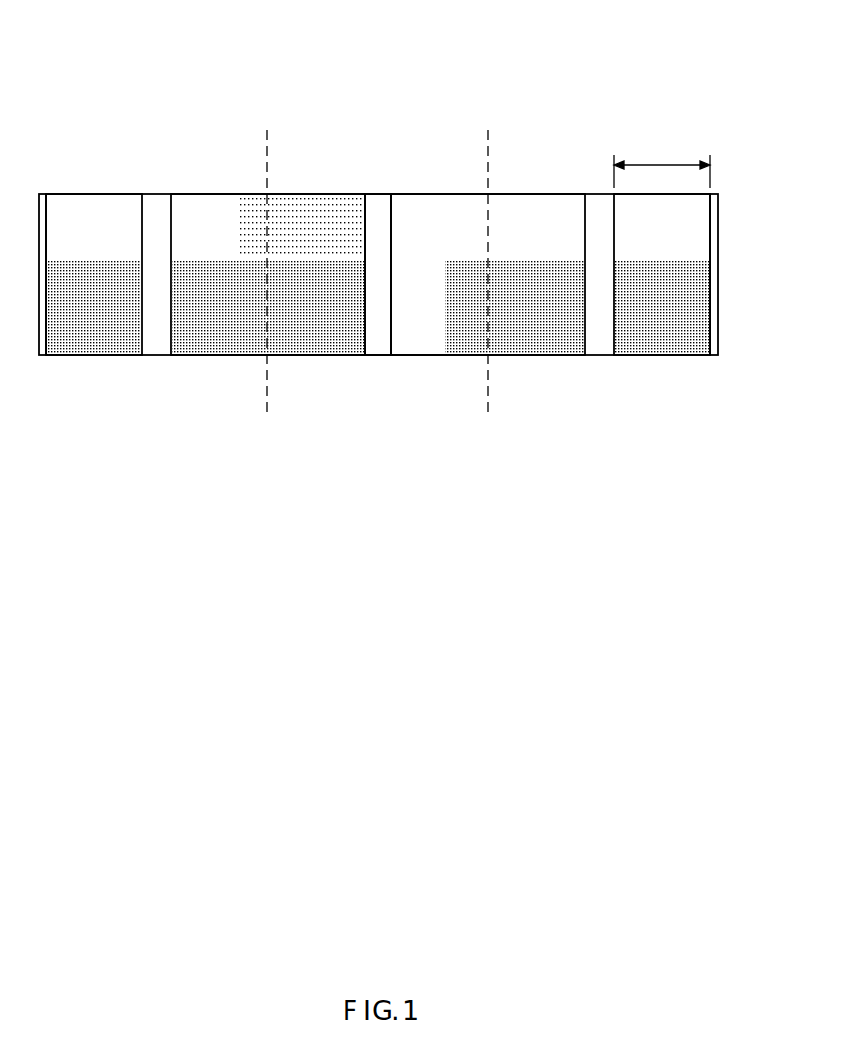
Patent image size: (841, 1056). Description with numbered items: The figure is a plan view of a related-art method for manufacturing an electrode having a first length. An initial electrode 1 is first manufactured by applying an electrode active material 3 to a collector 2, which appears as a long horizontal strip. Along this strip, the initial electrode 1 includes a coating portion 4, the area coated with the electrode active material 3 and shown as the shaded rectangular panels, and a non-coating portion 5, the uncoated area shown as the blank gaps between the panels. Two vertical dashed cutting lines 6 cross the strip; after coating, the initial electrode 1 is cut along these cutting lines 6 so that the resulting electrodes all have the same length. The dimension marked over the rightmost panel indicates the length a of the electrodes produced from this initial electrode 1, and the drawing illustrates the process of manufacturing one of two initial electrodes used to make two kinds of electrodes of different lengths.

The initial electrode 1 is at (531, 96).
The collector 2 is at (714, 272).
The electrode active material 3 is at (310, 198).
The coating portion 4 is at (309, 352).
The non-coating portion 5 is at (380, 352).
The cutting line 6 is at (266, 150).
The length a is at (662, 165).